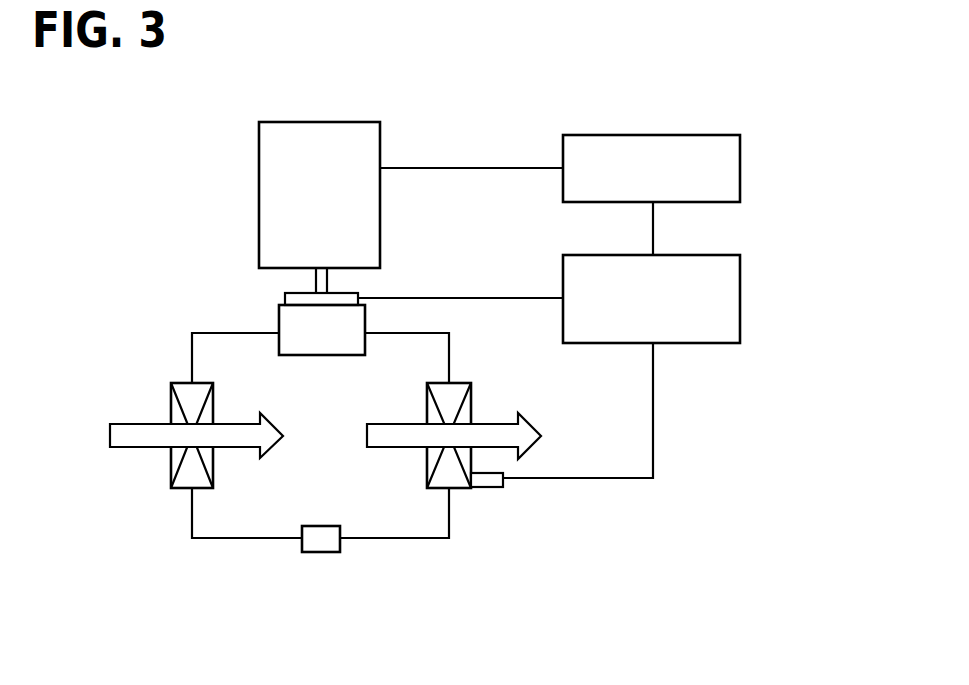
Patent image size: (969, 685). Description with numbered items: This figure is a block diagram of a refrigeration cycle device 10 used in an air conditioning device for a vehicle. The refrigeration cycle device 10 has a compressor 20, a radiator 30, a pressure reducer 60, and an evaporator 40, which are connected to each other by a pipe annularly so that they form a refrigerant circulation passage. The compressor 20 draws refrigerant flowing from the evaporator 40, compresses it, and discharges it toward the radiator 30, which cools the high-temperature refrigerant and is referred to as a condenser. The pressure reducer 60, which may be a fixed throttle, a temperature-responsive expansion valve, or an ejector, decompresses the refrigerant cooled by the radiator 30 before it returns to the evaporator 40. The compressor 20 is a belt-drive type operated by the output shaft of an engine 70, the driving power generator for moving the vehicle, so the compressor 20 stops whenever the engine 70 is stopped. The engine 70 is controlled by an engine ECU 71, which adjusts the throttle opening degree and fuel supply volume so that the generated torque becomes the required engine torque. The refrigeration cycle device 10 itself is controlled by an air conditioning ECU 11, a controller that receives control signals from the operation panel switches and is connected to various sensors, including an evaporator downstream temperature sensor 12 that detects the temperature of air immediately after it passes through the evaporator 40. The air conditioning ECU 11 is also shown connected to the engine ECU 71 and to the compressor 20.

The refrigeration cycle device 10 is at (509, 116).
The engine 70 is at (328, 122).
The engine ECU 71 is at (743, 168).
The air conditioning ECU 11 is at (743, 298).
The compressor 20 is at (279, 312).
The radiator 30 is at (178, 490).
The evaporator 40 is at (472, 393).
The evaporator downstream temperature sensor 12 is at (484, 489).
The pressure reducer 60 is at (322, 553).